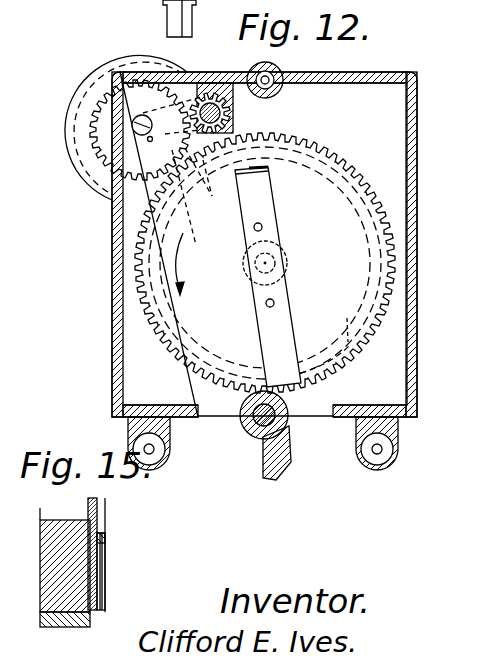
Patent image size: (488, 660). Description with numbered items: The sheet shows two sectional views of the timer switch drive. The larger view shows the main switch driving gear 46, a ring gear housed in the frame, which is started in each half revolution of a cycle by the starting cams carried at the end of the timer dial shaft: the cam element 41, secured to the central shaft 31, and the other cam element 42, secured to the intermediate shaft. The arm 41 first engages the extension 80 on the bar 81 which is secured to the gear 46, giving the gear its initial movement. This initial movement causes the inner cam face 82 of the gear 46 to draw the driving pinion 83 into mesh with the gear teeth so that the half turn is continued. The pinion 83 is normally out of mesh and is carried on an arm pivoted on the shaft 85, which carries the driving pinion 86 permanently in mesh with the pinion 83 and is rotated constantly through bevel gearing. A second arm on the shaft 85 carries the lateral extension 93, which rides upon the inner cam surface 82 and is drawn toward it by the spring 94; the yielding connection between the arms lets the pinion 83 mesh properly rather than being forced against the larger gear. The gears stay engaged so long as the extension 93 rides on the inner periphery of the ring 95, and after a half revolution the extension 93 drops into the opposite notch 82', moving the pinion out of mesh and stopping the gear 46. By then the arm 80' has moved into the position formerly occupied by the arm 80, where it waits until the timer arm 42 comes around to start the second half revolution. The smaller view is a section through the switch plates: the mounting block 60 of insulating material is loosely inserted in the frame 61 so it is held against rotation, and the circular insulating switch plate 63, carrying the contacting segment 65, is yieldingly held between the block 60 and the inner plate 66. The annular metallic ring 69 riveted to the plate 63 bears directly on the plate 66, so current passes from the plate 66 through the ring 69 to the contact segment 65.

In FIG. 12, the shaft 85 is at (243, 90).
In FIG. 12, the driving pinion 86 is at (232, 110).
In FIG. 12, the driving pinion 83 is at (98, 88).
In FIG. 12, the spring 94 is at (110, 200).
In FIG. 12, the inner cam face 82 is at (178, 170).
In FIG. 12, the lateral extension 93 is at (197, 264).
In FIG. 12, the ring 95 is at (217, 189).
In FIG. 12, the starting cam element 41 is at (222, 382).
In FIG. 12, the main switch driving gear 46 is at (318, 152).
In FIG. 12, the extension 80 is at (280, 277).
In FIG. 12, the arm 80' is at (282, 182).
In FIG. 12, the bar 81 is at (263, 319).
In FIG. 12, the notch 82' is at (329, 336).
In FIG. 12, the central shaft 31 is at (254, 442).
In FIG. 12, the cam element 42 is at (266, 480).
In FIG. 15, the mounting block 60 is at (57, 563).
In FIG. 15, the contacting segment 65 is at (88, 614).
In FIG. 15, the frame 61 is at (52, 548).
In FIG. 15, the switch plate 63 is at (89, 521).
In FIG. 15, the inner plate 66 is at (104, 572).
In FIG. 15, the annular metallic ring 69 is at (103, 538).